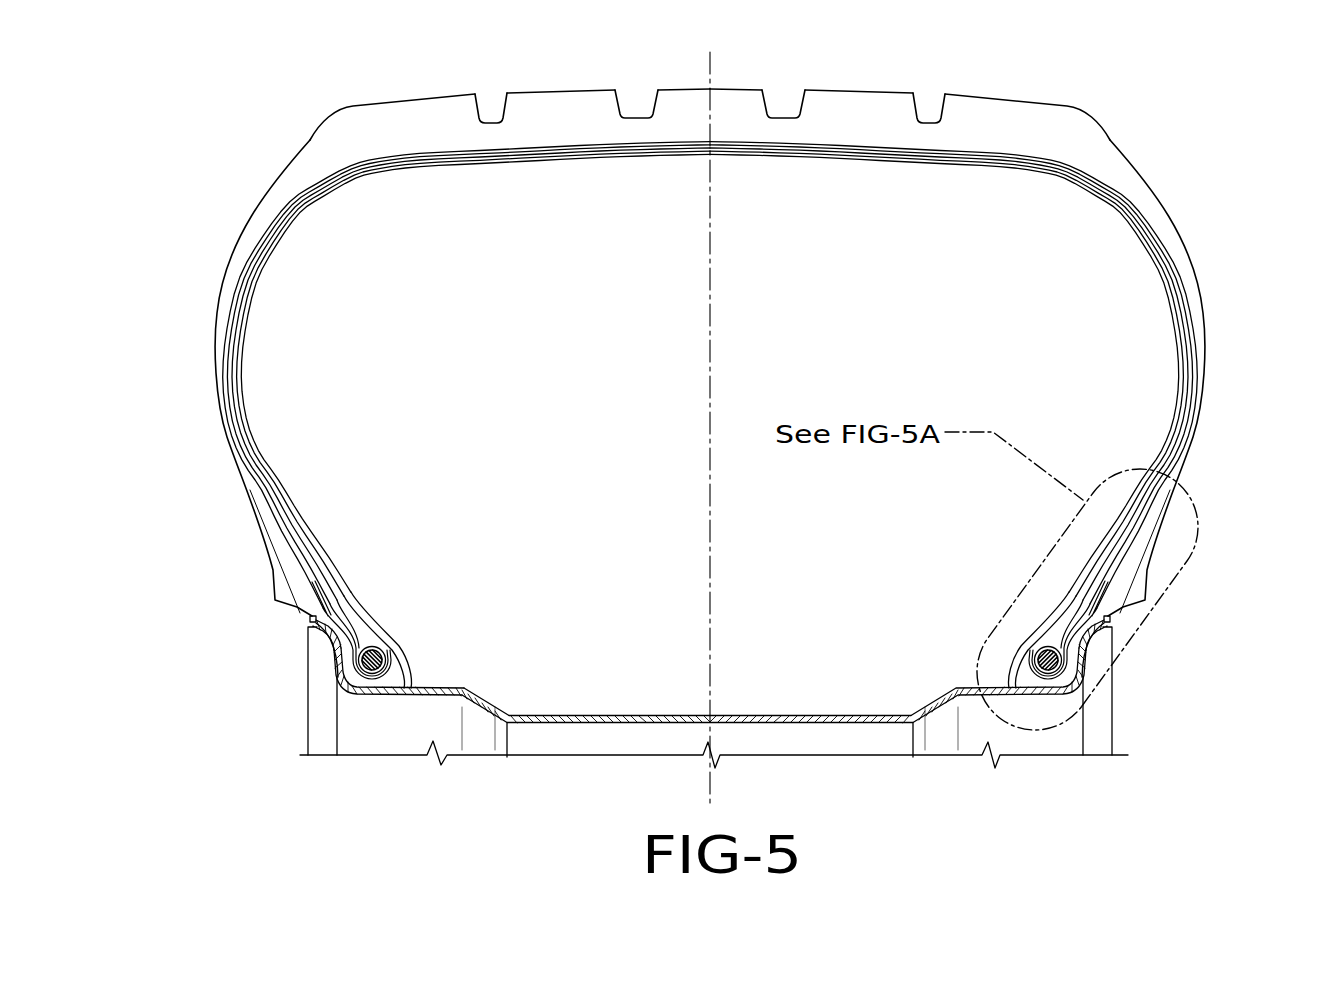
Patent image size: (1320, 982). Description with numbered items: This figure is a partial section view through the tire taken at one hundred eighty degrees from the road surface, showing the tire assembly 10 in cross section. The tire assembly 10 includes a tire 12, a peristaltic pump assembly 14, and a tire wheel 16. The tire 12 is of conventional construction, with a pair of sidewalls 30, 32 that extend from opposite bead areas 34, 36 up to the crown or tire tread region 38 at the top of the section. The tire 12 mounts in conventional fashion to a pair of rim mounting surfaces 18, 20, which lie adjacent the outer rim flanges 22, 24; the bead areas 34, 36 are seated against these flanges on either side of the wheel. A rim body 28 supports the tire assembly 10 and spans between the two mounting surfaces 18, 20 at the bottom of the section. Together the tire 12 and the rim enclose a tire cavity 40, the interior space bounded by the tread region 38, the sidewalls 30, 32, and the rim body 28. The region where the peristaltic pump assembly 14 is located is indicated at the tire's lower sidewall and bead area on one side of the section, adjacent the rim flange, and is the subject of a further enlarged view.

The tire assembly 10 is at (694, 353).
The tire 12 is at (1110, 127).
The peristaltic pump assembly 14 is at (735, 712).
The tire wheel 16 is at (812, 723).
The rim mounting surface 18 is at (1038, 693).
The rim mounting surface 20 is at (381, 695).
The outer rim flange 22 is at (1090, 633).
The outer rim flange 24 is at (338, 660).
The rim body 28 is at (535, 723).
The sidewall 30 is at (1173, 213).
The sidewall 32 is at (217, 322).
The bead area 34 is at (1038, 657).
The bead area 36 is at (380, 658).
The crown or tire tread region 38 is at (528, 90).
The tire cavity 40 is at (808, 200).